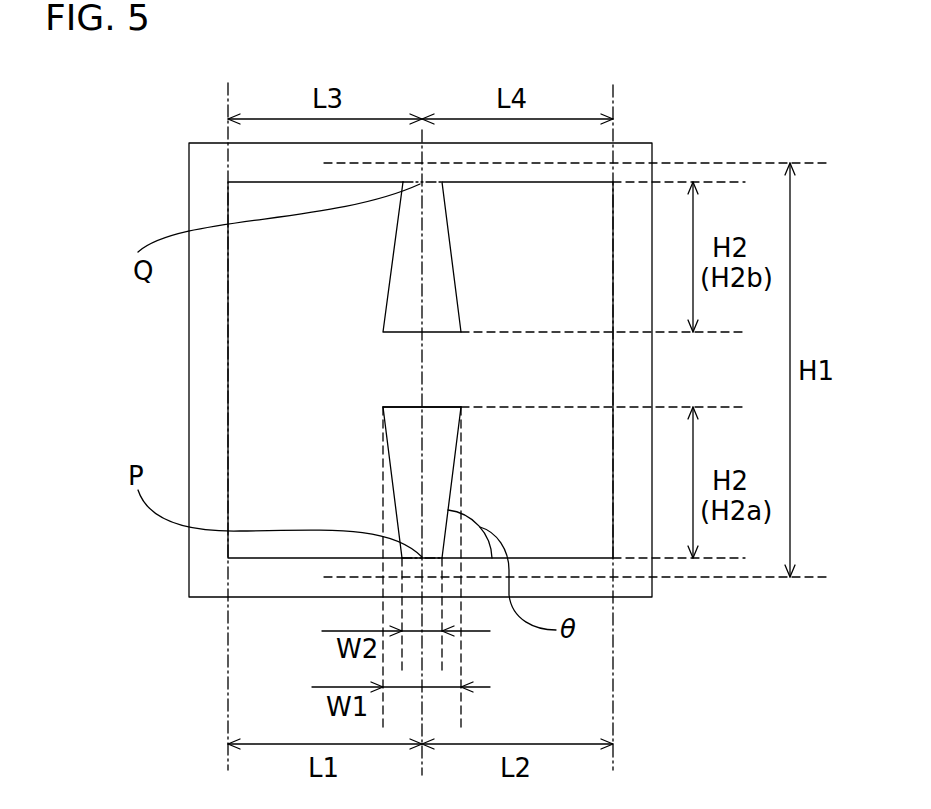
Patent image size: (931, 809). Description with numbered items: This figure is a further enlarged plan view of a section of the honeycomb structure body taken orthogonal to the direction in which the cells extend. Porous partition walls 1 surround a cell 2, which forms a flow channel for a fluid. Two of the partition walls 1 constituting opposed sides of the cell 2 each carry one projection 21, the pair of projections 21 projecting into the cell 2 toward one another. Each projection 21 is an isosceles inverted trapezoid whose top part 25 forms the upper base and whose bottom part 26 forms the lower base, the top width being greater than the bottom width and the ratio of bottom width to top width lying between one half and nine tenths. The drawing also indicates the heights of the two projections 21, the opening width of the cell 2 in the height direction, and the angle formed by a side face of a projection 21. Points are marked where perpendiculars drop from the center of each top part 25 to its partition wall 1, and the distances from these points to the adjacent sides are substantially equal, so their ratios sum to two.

The partition wall 1 is at (543, 157).
The cell 2 is at (575, 245).
The projection 21 is at (429, 268).
The top part 25 is at (422, 407).
The bottom part 26 is at (445, 559).